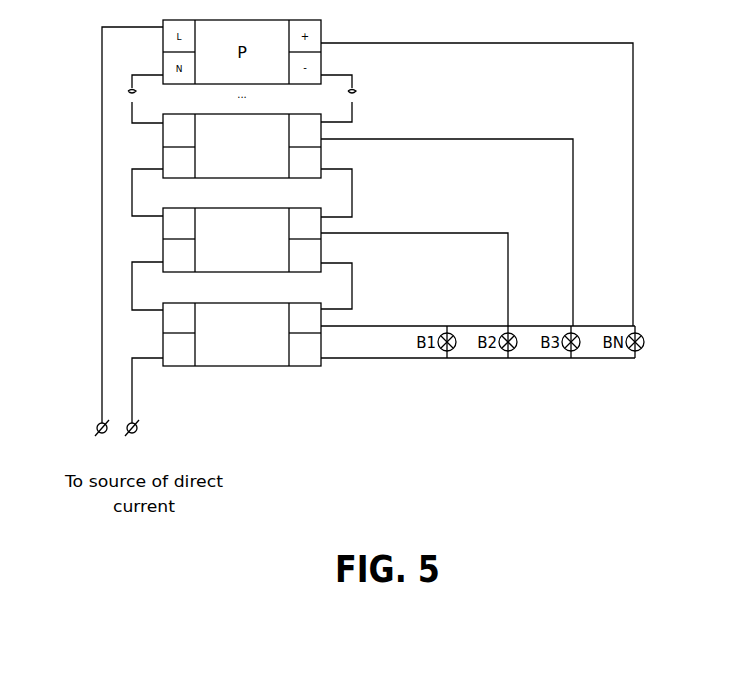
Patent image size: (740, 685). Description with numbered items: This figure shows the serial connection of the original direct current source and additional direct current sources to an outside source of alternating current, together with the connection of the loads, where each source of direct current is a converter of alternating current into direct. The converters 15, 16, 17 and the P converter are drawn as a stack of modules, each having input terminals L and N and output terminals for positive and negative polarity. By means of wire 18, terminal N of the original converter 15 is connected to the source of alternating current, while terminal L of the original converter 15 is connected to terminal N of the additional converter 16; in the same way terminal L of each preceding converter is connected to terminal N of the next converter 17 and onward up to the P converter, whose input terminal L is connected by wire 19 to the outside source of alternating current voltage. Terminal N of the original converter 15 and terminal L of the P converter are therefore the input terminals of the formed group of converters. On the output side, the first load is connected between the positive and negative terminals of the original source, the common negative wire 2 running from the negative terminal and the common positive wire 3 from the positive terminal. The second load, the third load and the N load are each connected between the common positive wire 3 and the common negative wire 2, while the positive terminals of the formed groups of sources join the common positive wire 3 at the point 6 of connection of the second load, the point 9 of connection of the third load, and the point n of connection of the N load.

The common negative wire 2 is at (384, 362).
The common positive wire 3 is at (384, 322).
The point of connection of second load 6 is at (511, 322).
The point of connection of third load 9 is at (575, 322).
The point of connection of N load n is at (638, 322).
The original converter of alternating current into direct 15 is at (242, 334).
The additional converter of alternating current into direct 16 is at (242, 240).
The additional converter of alternating current into direct 17 is at (242, 146).
The wire 18 is at (137, 389).
The wire 19 is at (99, 394).